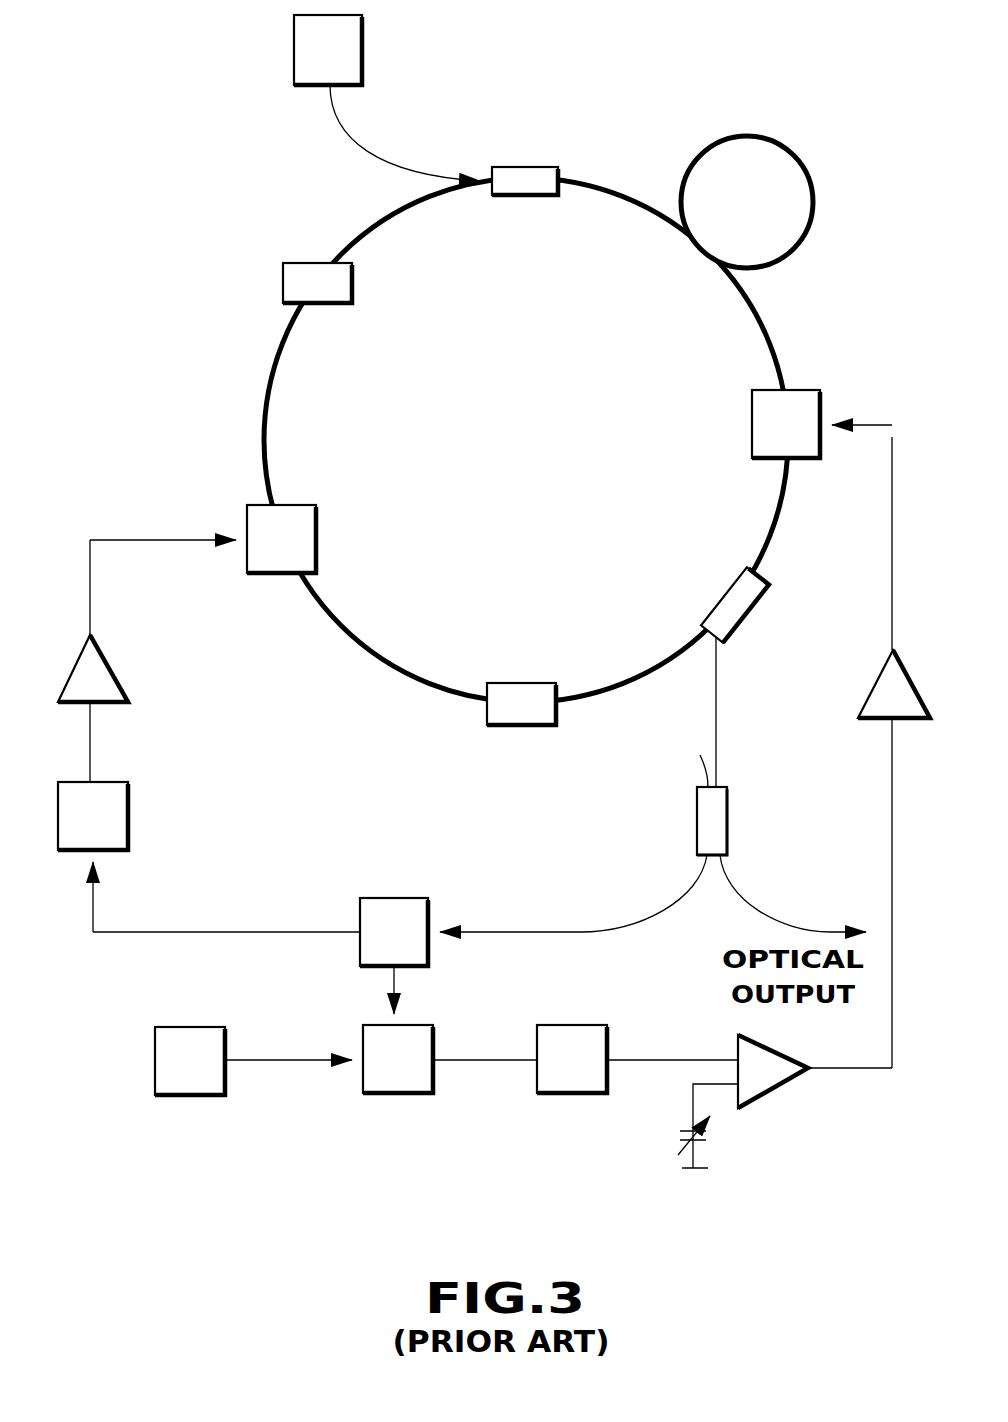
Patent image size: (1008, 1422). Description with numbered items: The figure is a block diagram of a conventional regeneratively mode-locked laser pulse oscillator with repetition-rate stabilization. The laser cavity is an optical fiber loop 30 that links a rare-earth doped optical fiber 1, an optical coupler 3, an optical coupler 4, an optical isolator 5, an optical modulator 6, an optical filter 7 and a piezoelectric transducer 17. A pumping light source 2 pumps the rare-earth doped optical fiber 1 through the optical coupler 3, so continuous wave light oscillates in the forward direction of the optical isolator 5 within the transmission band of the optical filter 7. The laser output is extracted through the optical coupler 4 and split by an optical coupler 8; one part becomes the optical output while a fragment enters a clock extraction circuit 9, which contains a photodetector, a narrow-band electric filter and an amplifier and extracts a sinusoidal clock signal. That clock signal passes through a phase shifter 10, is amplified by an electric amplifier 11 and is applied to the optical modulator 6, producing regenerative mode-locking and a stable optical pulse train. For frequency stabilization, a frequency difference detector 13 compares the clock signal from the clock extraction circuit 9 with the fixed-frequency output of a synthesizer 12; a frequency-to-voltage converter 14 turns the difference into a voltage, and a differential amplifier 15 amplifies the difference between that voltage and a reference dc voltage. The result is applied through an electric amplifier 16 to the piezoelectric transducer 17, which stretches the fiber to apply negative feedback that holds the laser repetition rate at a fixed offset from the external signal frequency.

The rare-earth doped optical fiber 1 is at (812, 178).
The pumping light source 2 is at (362, 50).
The optical coupler 3 is at (527, 166).
The optical coupler 4 is at (766, 578).
The optical isolator 5 is at (516, 726).
The optical modulator 6 is at (318, 522).
The optical filter 7 is at (283, 272).
The optical coupler 8 is at (728, 816).
The clock extraction circuit 9 is at (382, 898).
The phase shifter 10 is at (128, 812).
The electric amplifier 11 is at (108, 662).
The external signal generator (synthesizer) 12 is at (198, 1095).
The frequency difference detector 13 is at (404, 1093).
The frequency-to-voltage converter 14 is at (570, 1093).
The differential amplifier 15 is at (762, 1100).
The electric amplifier 16 is at (880, 682).
The piezoelectric transducer (PZT fiber stretcher) 17 is at (822, 392).
The optical fiber loop 30 is at (264, 413).